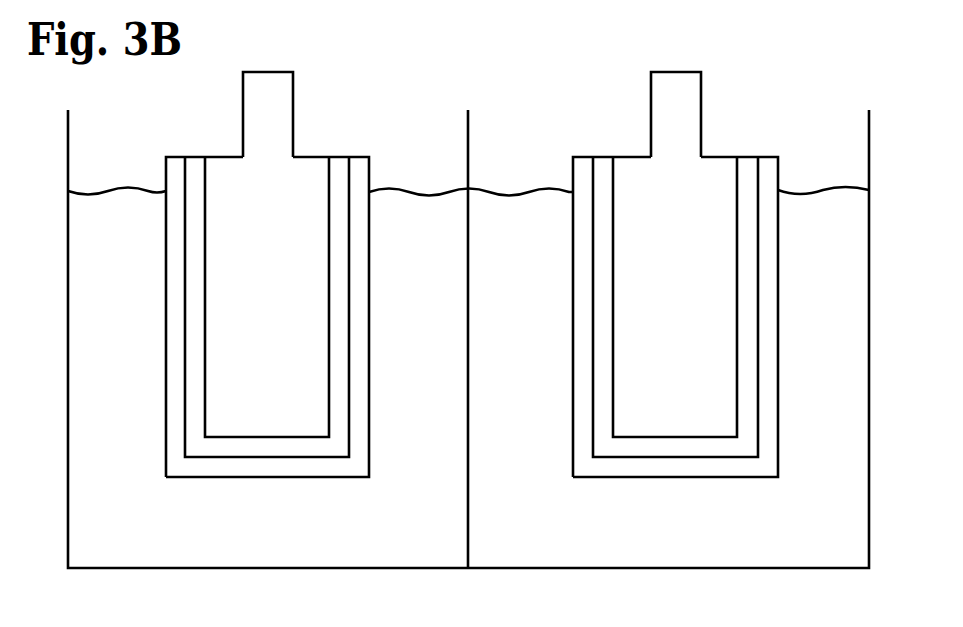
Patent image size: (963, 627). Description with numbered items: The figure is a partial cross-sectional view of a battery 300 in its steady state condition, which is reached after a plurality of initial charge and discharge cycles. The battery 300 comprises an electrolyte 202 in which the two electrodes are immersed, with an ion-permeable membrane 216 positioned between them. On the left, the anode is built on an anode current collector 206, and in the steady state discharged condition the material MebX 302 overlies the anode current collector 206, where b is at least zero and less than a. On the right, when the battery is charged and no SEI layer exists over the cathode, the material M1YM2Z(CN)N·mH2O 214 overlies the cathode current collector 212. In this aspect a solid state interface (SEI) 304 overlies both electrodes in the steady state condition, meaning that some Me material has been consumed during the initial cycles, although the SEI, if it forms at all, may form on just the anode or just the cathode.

The battery 300 is at (815, 80).
The electrolyte 202 is at (291, 546).
The anode current collector 206 is at (291, 301).
The cathode current collector 212 is at (699, 301).
The M1YM2Z(CN)N·mH2O 214 is at (746, 162).
The ion-permeable membrane 216 is at (468, 538).
The MebX 302 is at (175, 160).
The solid state interface (SEI) 304 is at (581, 165).